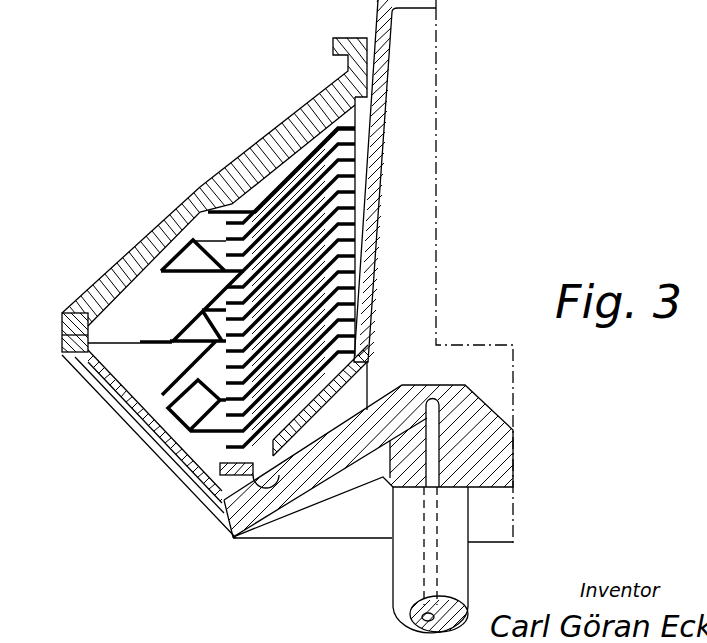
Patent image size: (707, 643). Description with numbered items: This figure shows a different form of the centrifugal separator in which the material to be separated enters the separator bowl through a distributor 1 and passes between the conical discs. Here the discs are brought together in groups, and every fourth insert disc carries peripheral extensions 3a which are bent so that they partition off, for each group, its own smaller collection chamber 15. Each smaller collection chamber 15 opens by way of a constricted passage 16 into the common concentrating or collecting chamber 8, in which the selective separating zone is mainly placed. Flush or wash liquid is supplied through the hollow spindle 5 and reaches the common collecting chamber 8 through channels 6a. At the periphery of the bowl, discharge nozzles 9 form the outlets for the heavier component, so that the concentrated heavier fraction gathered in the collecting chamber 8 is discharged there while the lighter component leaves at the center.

The distributor 1 is at (375, 190).
The peripheral extensions 3a is at (168, 328).
The hollow spindle 5 is at (405, 565).
The channels 6a is at (210, 514).
The concentration or collection chamber 8 is at (120, 346).
The discharge nozzles 9 is at (62, 342).
The smaller collection chamber 15 is at (197, 215).
The constricted passage 16 is at (168, 257).